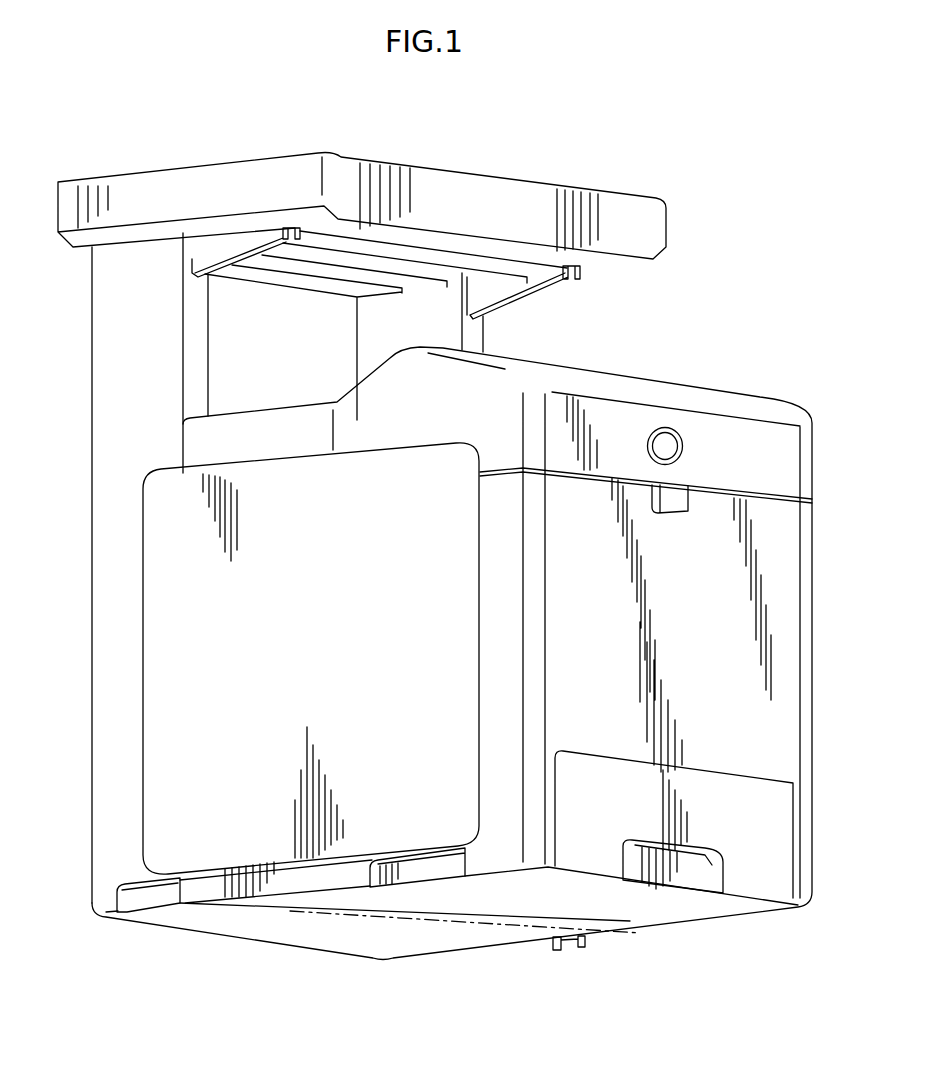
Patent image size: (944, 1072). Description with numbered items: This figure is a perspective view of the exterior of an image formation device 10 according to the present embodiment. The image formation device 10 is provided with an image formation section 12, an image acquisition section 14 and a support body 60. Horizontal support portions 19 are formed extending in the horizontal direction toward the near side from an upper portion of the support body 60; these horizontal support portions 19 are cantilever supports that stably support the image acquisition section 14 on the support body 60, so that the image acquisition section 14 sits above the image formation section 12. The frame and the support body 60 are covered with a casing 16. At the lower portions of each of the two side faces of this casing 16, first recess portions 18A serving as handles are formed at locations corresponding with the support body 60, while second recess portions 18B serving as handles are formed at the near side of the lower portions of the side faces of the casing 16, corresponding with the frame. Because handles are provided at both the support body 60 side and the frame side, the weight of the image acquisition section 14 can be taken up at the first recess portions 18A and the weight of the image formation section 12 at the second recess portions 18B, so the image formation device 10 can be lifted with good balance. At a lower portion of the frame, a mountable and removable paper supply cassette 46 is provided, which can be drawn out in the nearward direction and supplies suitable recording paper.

The image formation device 10 is at (727, 120).
The image formation section 12 is at (828, 463).
The image acquisition section 14 is at (199, 153).
The casing 16 is at (168, 804).
The first recess portions 18A is at (177, 897).
The second recess portions 18B is at (460, 862).
The horizontal support portions 19 is at (500, 288).
The paper supply cassette 46 is at (784, 847).
The support body 60 is at (82, 378).